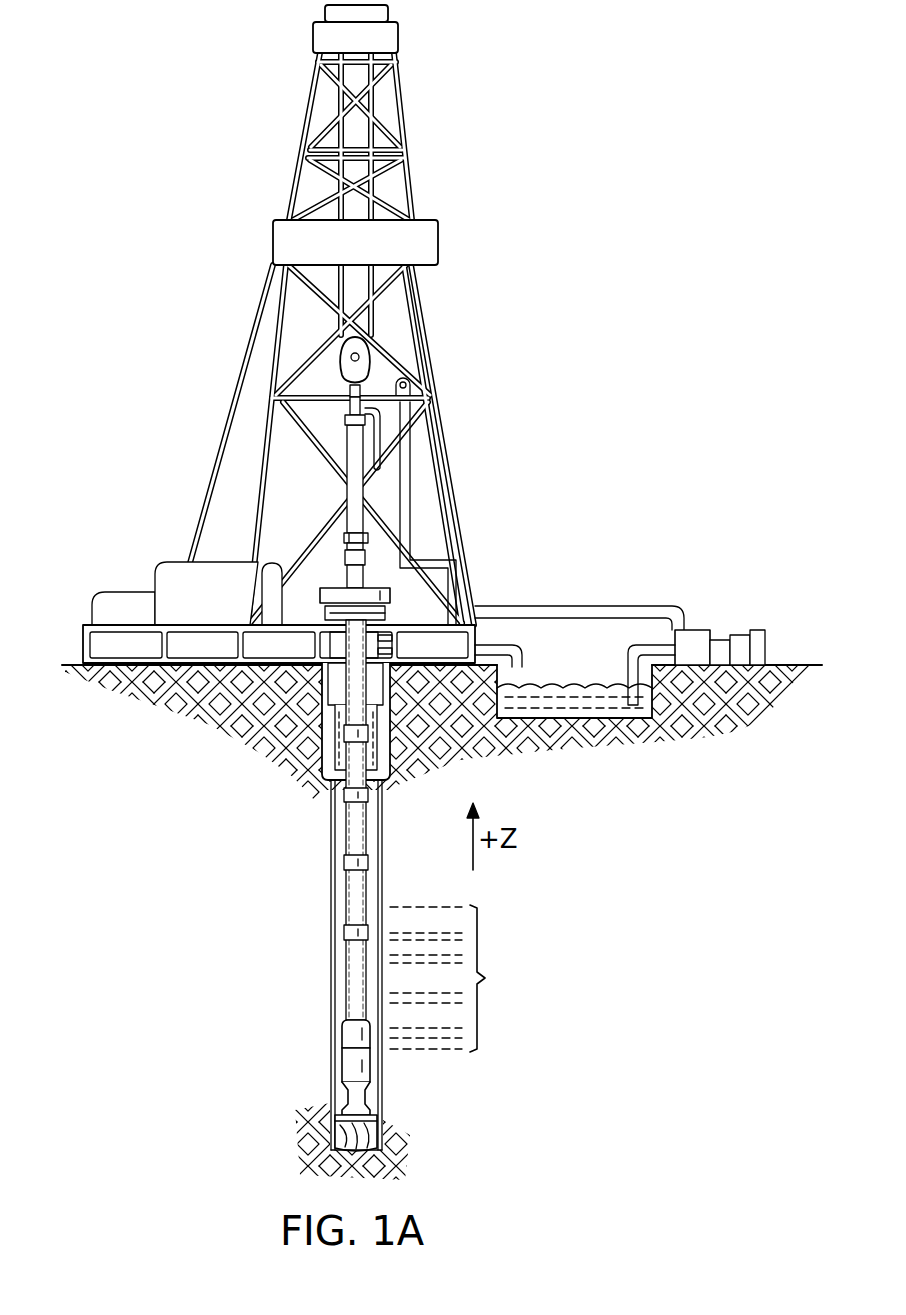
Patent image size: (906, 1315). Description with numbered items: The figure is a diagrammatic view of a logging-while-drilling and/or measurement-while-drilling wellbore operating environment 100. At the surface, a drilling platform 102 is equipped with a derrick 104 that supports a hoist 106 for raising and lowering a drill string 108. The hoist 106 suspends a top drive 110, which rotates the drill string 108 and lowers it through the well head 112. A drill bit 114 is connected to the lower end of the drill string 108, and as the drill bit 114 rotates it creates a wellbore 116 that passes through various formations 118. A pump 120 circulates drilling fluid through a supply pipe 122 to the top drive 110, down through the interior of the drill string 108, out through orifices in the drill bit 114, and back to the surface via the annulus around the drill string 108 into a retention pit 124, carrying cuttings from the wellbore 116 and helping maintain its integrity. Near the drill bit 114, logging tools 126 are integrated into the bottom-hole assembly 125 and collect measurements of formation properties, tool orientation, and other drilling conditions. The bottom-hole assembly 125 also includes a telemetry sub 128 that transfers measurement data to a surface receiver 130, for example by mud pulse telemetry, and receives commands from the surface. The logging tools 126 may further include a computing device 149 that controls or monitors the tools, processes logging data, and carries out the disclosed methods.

The wellbore operating environment 100 is at (163, 81).
The drilling platform 102 is at (85, 647).
The derrick 104 is at (410, 133).
The hoist 106 is at (340, 368).
The drill string 108 is at (365, 828).
The top drive 110 is at (355, 460).
The well head 112 is at (333, 587).
The drill bit 114 is at (378, 1116).
The wellbore 116 is at (380, 850).
The formations 118 is at (463, 978).
The pump 120 is at (700, 630).
The supply pipe 122 is at (583, 605).
The retention pit 124 is at (574, 693).
The bottom-hole assembly 125 is at (277, 1065).
The logging tools 126 is at (350, 1068).
The telemetry sub 128 is at (350, 1037).
The surface receiver 130 is at (365, 495).
The computing device 149 is at (367, 1096).